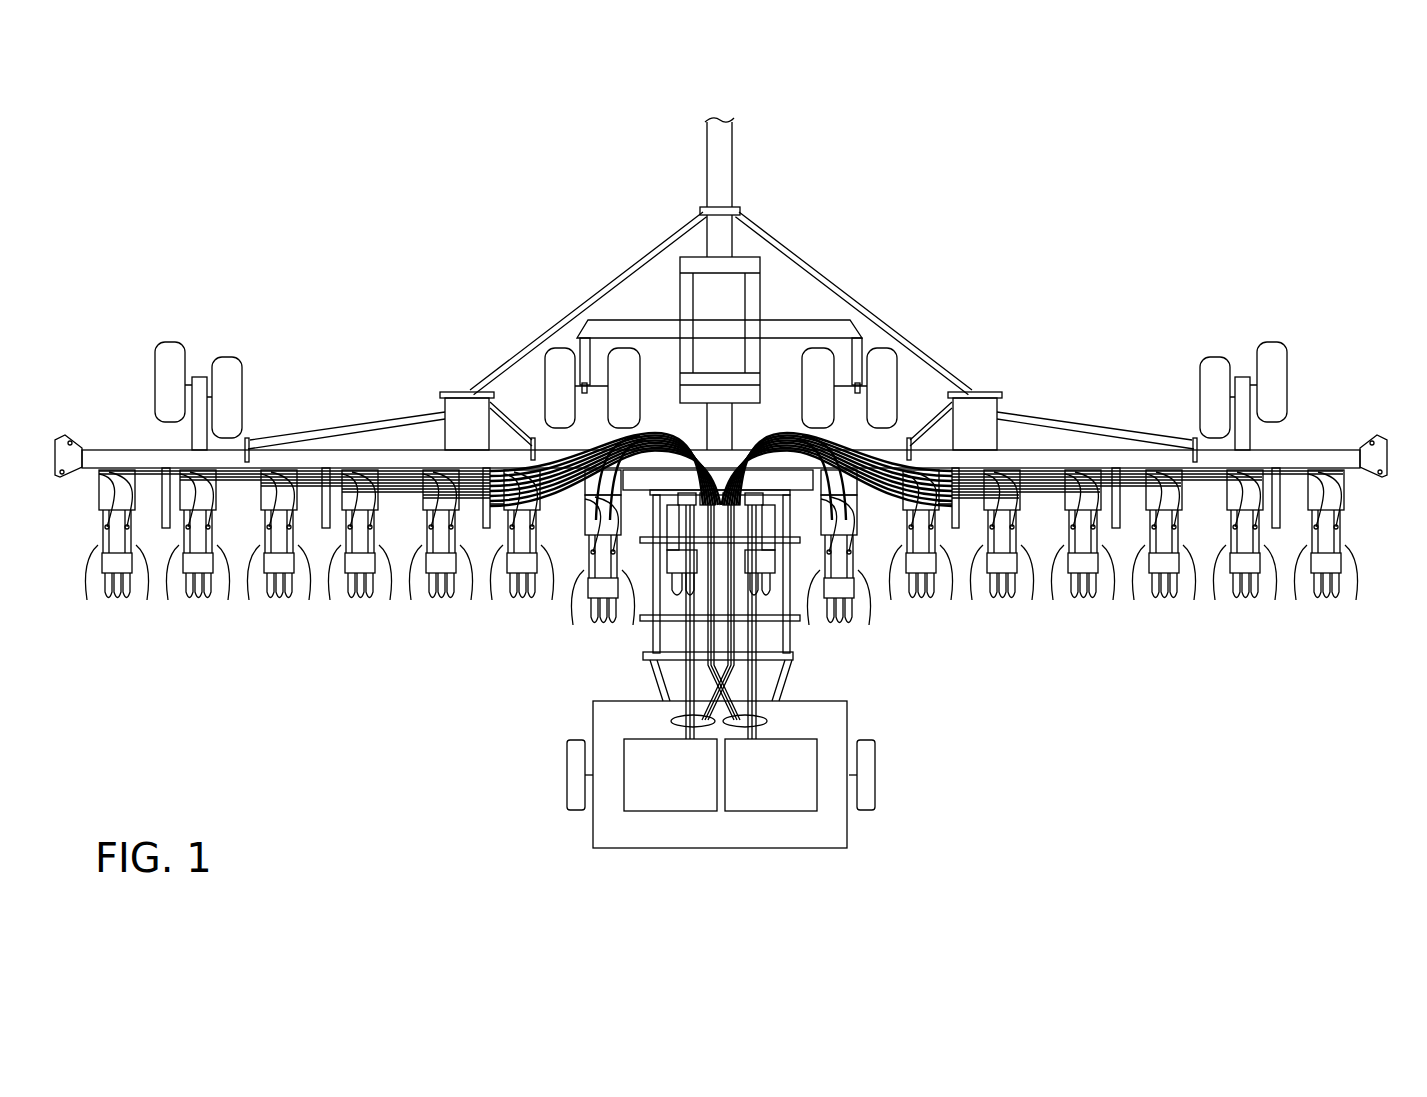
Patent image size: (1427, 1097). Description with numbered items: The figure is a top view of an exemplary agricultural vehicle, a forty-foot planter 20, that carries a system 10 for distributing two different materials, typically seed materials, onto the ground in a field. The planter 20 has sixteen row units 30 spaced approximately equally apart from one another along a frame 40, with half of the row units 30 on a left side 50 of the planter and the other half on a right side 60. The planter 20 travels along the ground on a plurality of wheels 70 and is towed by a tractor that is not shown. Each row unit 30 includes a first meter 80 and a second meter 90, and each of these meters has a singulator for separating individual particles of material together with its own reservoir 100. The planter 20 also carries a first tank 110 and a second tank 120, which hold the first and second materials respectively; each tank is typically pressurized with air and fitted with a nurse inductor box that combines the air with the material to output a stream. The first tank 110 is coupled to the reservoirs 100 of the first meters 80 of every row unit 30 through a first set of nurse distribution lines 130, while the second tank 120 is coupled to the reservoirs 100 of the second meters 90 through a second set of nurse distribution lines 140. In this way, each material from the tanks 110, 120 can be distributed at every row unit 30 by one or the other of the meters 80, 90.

The system 10 is at (1028, 232).
The planter 20 is at (410, 232).
The row unit 30 is at (188, 652).
The frame 40 is at (225, 447).
The left side 50 is at (300, 782).
The right side 60 is at (1065, 782).
The wheel 70 is at (225, 345).
The first meter 80 is at (715, 598).
The second meter 90 is at (722, 612).
The reservoir 100 is at (143, 525).
The first tank 110 is at (687, 786).
The second tank 120 is at (790, 786).
The first set of nurse distribution lines 130 is at (108, 477).
The second set of nurse distribution lines 140 is at (115, 487).